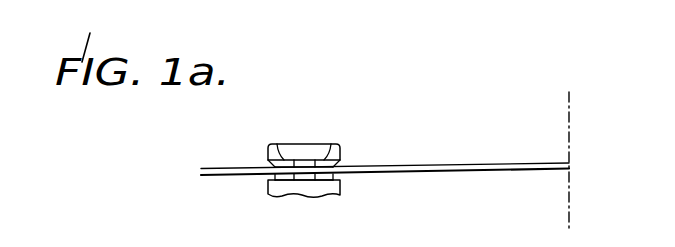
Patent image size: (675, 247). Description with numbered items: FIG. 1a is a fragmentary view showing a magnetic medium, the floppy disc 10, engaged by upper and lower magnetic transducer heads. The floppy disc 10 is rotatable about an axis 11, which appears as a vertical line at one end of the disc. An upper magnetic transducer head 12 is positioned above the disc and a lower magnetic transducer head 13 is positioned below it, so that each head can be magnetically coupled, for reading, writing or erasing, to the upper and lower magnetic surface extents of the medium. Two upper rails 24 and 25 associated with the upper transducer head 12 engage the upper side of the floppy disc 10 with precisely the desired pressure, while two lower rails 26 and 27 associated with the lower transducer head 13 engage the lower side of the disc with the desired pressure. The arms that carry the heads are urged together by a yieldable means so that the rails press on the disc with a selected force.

The floppy disc 10 is at (491, 163).
The axis 11 is at (572, 213).
The upper magnetic transducer head 12 is at (296, 152).
The lower magnetic transducer head 13 is at (307, 187).
The upper rail 24 is at (275, 147).
The upper rail 25 is at (327, 150).
The lower rail 26 is at (270, 178).
The lower rail 27 is at (340, 177).